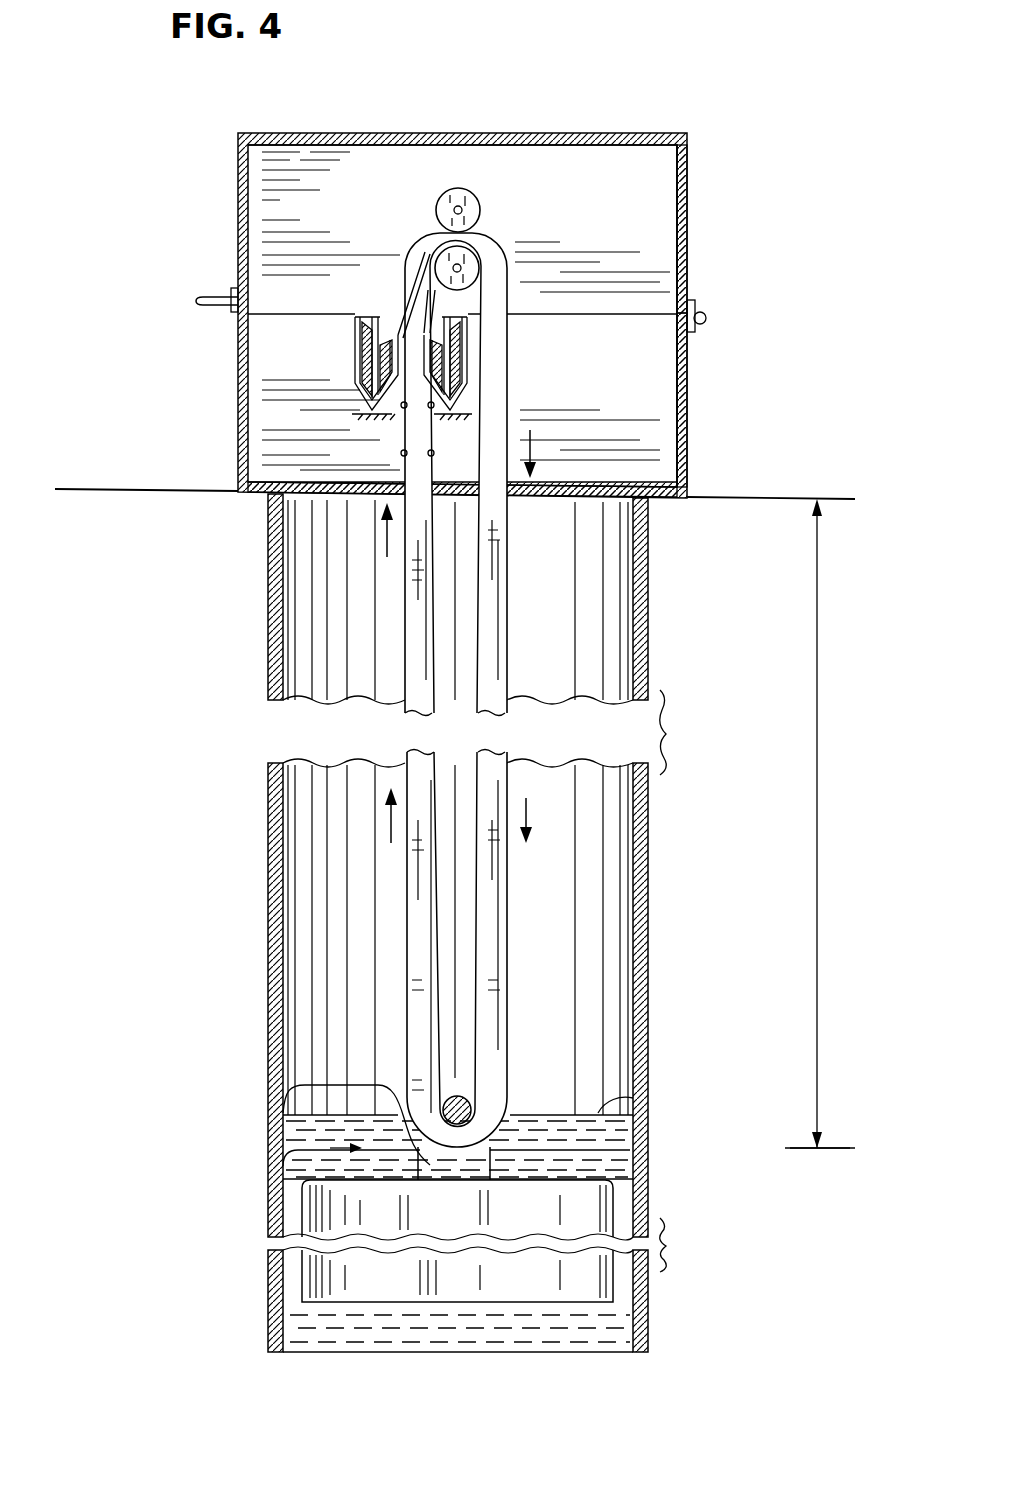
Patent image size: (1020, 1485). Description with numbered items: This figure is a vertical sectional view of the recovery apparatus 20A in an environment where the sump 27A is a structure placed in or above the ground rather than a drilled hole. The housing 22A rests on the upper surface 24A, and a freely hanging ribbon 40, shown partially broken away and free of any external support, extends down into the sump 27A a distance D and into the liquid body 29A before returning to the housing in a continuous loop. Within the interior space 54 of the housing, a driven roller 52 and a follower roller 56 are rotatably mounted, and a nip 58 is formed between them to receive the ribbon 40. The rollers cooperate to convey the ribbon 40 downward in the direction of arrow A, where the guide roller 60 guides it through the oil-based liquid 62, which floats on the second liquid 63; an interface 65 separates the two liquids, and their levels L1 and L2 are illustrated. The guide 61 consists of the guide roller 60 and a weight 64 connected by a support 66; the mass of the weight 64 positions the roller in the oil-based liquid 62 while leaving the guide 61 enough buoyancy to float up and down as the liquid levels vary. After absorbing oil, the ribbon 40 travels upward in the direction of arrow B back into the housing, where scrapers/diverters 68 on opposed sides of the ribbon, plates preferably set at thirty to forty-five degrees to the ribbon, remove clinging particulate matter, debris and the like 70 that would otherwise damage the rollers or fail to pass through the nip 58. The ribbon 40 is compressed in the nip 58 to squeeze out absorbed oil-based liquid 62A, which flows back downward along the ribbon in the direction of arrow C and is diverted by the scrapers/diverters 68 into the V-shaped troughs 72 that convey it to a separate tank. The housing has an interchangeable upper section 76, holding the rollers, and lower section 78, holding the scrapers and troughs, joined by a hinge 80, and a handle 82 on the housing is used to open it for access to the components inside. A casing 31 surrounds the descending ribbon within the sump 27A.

The recovery apparatus 20A is at (225, 160).
The housing 22A is at (692, 185).
The upper section 76 is at (688, 240).
The lower section 78 is at (688, 385).
The hinge 80 is at (708, 316).
The upper surface 24A is at (652, 487).
The interior space 54 is at (354, 211).
The well casing 31 is at (235, 685).
The sump 27A is at (650, 993).
The distance D is at (820, 823).
The liquid body 29A is at (791, 1135).
The oil-based liquid 62 is at (298, 1137).
The interface 65 is at (630, 1140).
The level of the oil-based liquid L1 is at (640, 1103).
The level of the second liquid L2 is at (632, 1152).
The support 66 is at (283, 1092).
The guide 61 is at (283, 1163).
The weight 64 is at (590, 1288).
The second liquid 63 is at (615, 1338).
The ribbon 40 is at (425, 234).
The nip 58 is at (436, 240).
The driven roller 52 is at (470, 192).
The follower roller 56 is at (478, 252).
The scrapers/diverters 68 is at (390, 304).
The V-shaped trough 72 is at (357, 378).
The squeezed oil-based liquid 62A is at (405, 312).
The particulate matter, debris and the like 70 is at (398, 418).
The handle 82 is at (212, 297).
The arrow C is at (403, 238).
The arrow B is at (390, 832).
The arrow A is at (527, 800).
The guide roller 60 is at (465, 1103).